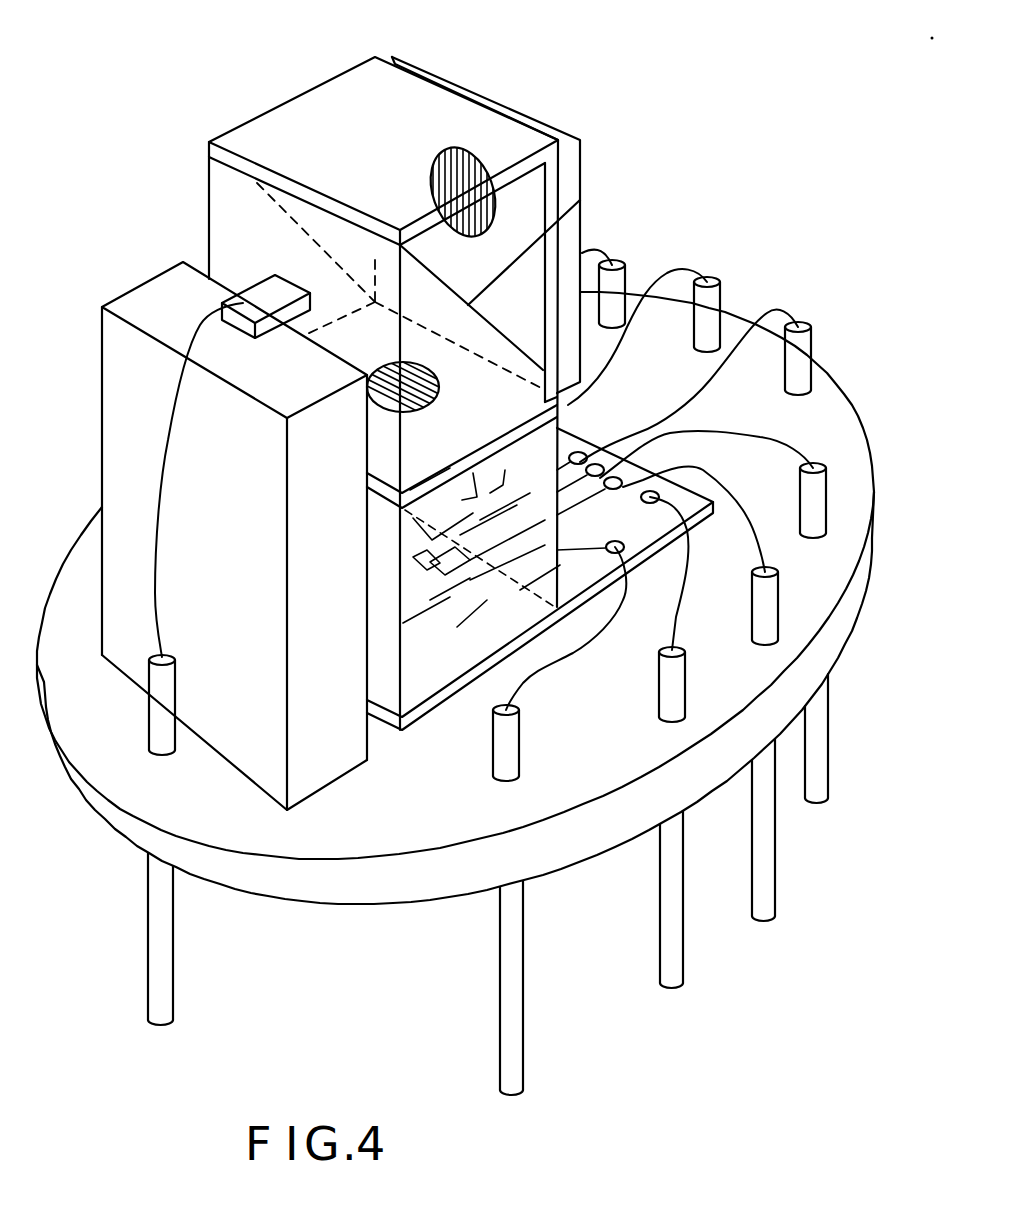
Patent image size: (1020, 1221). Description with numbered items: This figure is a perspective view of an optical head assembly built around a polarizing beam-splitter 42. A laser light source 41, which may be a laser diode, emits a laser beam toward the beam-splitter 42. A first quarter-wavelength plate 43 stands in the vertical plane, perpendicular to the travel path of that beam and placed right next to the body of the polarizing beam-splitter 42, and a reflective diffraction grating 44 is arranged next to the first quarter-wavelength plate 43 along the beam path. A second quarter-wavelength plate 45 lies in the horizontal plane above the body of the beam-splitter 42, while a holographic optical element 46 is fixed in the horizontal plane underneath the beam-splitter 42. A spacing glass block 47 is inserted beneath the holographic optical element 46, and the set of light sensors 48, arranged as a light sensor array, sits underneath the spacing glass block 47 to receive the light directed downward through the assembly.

The laser light source 41 is at (243, 285).
The polarizing beam-splitter 42 is at (580, 200).
The first quarter-wavelength plate 43 is at (553, 190).
The reflective diffraction grating 44 is at (478, 155).
The second quarter-wavelength plate 45 is at (348, 130).
The holographic optical element 46 is at (443, 389).
The spacing glass block 47 is at (387, 668).
The set of light sensors 48 is at (540, 579).